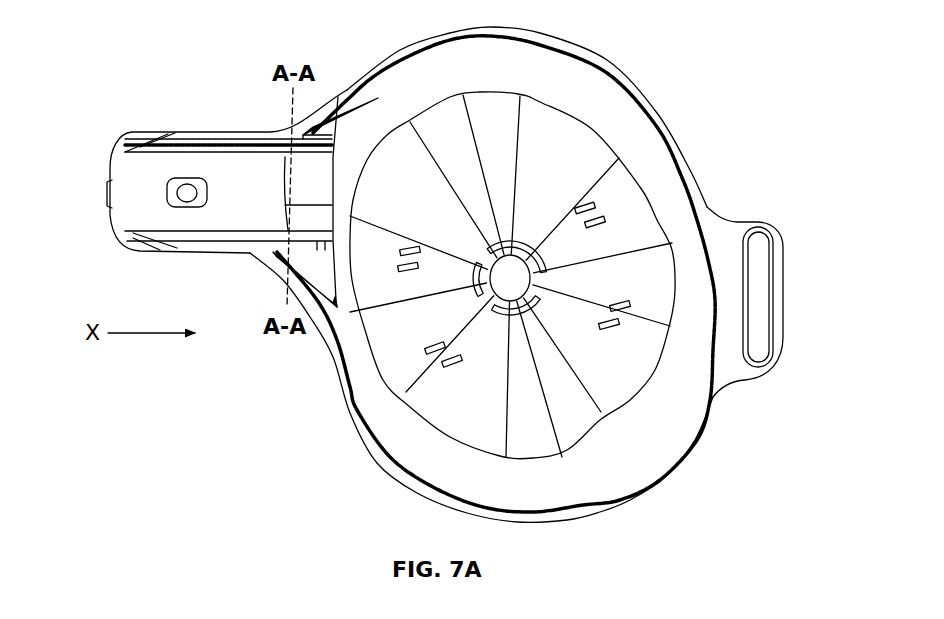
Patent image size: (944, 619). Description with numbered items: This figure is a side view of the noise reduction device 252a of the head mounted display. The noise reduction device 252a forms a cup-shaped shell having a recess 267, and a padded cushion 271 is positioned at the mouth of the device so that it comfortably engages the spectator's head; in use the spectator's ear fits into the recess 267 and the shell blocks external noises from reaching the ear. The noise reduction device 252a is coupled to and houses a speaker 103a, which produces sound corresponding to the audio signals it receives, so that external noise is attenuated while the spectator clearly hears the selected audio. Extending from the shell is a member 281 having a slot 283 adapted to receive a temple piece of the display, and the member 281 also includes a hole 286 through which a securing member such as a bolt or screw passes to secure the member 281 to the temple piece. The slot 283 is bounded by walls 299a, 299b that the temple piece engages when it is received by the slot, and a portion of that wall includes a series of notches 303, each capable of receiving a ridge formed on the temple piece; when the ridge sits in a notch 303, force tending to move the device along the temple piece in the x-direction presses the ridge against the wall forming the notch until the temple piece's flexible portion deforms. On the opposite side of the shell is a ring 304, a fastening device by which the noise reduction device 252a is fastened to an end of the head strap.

The noise reduction device 252a is at (600, 38).
The padded cushion 271 is at (660, 178).
The speaker 103a is at (550, 287).
The ring 304 is at (787, 341).
The recess 267 is at (582, 428).
The notch 303 is at (200, 140).
The hole 286 is at (192, 186).
The wall of slot 299b is at (180, 228).
The wall of slot 299a is at (132, 157).
The slot 283 is at (104, 201).
The member 281 is at (172, 258).